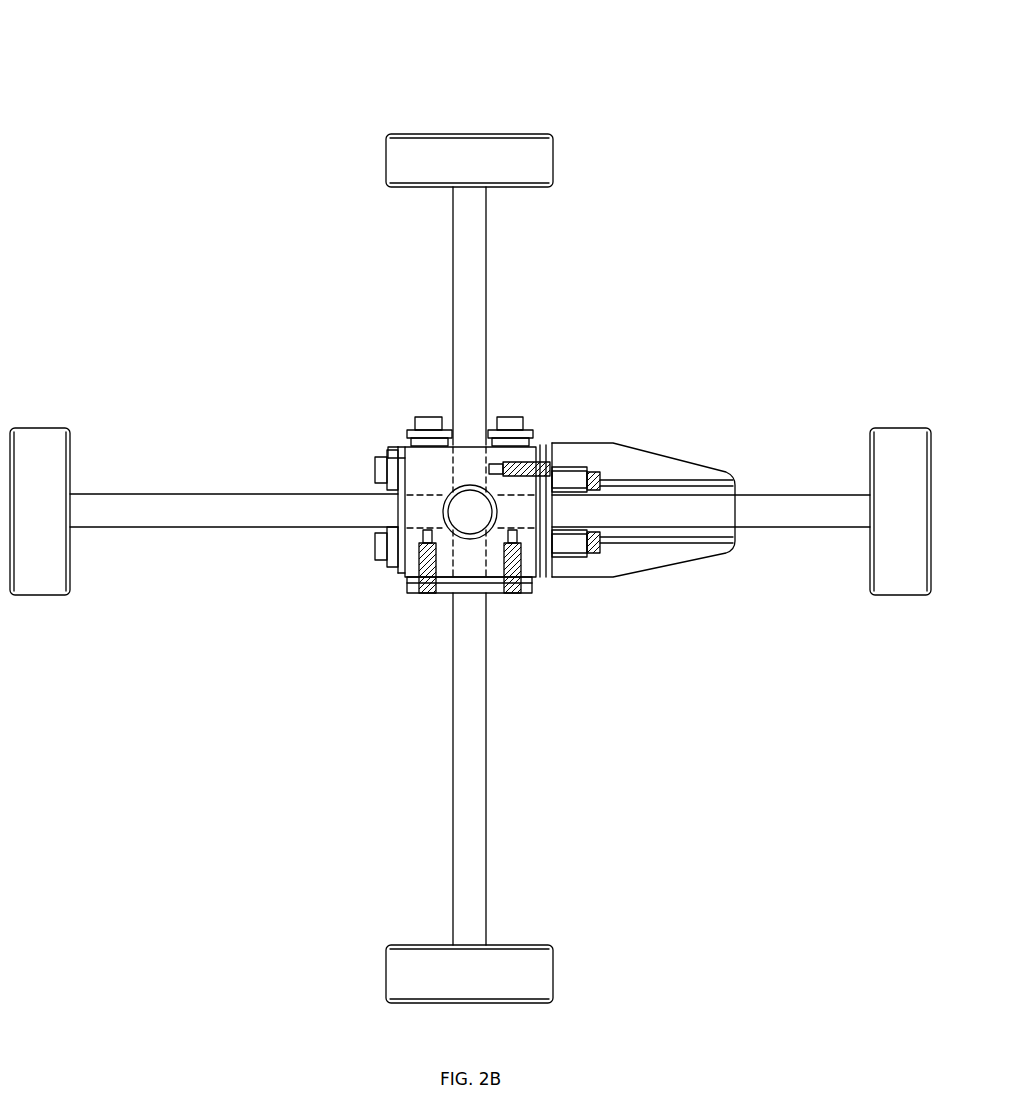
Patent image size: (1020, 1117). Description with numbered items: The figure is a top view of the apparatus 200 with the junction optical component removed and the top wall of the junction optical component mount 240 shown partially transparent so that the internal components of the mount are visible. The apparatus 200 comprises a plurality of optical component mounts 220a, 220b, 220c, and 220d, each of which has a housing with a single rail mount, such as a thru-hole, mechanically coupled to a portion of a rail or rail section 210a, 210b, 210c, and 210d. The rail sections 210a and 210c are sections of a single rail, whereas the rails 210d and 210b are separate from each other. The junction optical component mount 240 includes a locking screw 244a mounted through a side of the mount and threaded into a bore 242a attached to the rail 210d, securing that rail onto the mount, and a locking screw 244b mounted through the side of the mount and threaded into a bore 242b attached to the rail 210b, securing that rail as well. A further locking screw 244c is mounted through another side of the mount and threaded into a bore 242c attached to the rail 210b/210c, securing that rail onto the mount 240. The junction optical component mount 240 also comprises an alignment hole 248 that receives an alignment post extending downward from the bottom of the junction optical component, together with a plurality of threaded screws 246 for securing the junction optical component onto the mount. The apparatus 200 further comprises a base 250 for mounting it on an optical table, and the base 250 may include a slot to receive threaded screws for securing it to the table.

The apparatus 200 is at (260, 122).
The rail section 210a is at (468, 772).
The rail 210b is at (840, 512).
The rail section 210c is at (468, 302).
The rail 210d is at (250, 510).
The optical component mount 220a is at (527, 937).
The optical component mount 220b is at (900, 417).
The optical component mount 220c is at (488, 125).
The optical component mount 220d is at (45, 417).
The junction optical component mount 240 is at (400, 437).
The bore 242a is at (390, 570).
The bore 242b is at (553, 568).
The bore 242c is at (525, 462).
The locking screw 244a is at (427, 595).
The locking screw 244b is at (513, 595).
The locking screw 244c is at (547, 463).
The threaded screws 246 is at (430, 416).
The alignment hole 248 is at (470, 483).
The base 250 is at (662, 438).